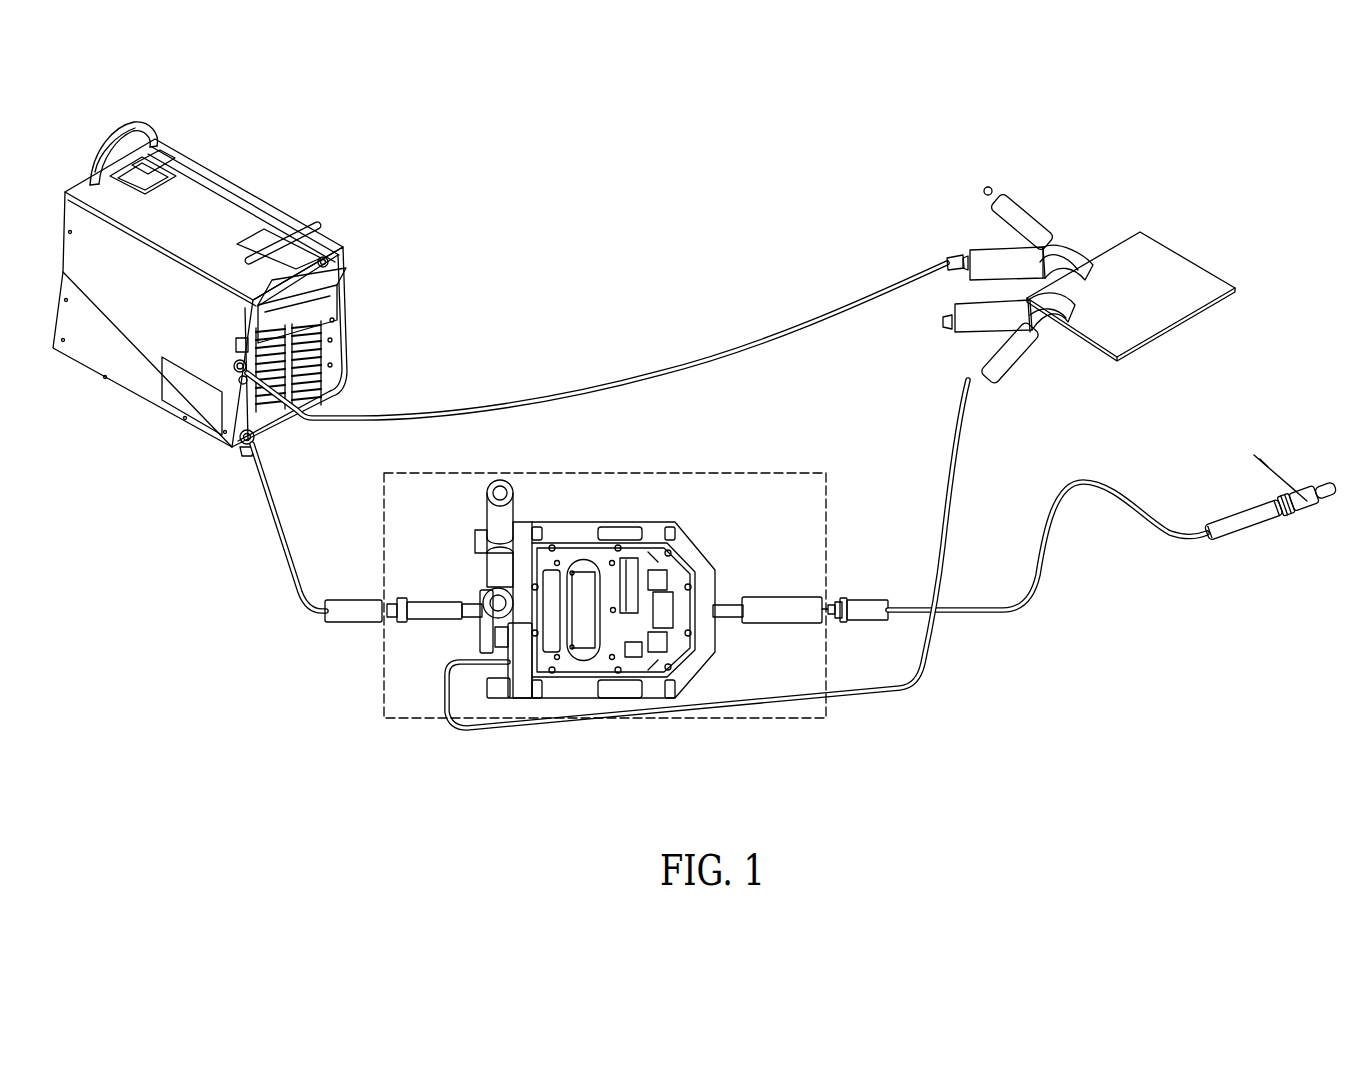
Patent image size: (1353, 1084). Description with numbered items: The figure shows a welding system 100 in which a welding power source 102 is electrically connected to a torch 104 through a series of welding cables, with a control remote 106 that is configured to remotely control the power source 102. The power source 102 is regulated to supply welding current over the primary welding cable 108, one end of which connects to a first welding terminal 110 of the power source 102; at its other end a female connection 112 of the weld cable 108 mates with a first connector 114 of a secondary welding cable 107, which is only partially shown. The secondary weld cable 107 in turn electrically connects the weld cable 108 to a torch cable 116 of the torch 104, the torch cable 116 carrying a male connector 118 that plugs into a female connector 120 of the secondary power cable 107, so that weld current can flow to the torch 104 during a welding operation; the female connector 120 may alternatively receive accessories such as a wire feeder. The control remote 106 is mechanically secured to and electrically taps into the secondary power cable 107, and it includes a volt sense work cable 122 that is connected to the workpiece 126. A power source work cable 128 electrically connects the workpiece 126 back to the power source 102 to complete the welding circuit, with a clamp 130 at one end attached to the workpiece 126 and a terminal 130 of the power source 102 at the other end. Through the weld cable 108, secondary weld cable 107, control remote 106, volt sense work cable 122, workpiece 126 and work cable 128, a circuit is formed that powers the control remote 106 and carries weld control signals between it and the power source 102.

The welding system 100 is at (1228, 160).
The welding power source 102 is at (237, 182).
The torch 104 is at (1290, 471).
The control remote 106 is at (606, 470).
The secondary welding cable 107 is at (465, 600).
The primary welding cable 108 is at (278, 473).
The first welding terminal 110 is at (243, 456).
The female connection 112 is at (350, 598).
The first connector 114 is at (422, 598).
The torch cable 116 is at (1084, 480).
The male connector 118 is at (866, 600).
The female connector 120 is at (780, 597).
The volt sense work cable 122 is at (944, 484).
The workpiece 126 is at (1190, 258).
The power source work cable 128 is at (561, 392).
The clamp 130 is at (238, 358).